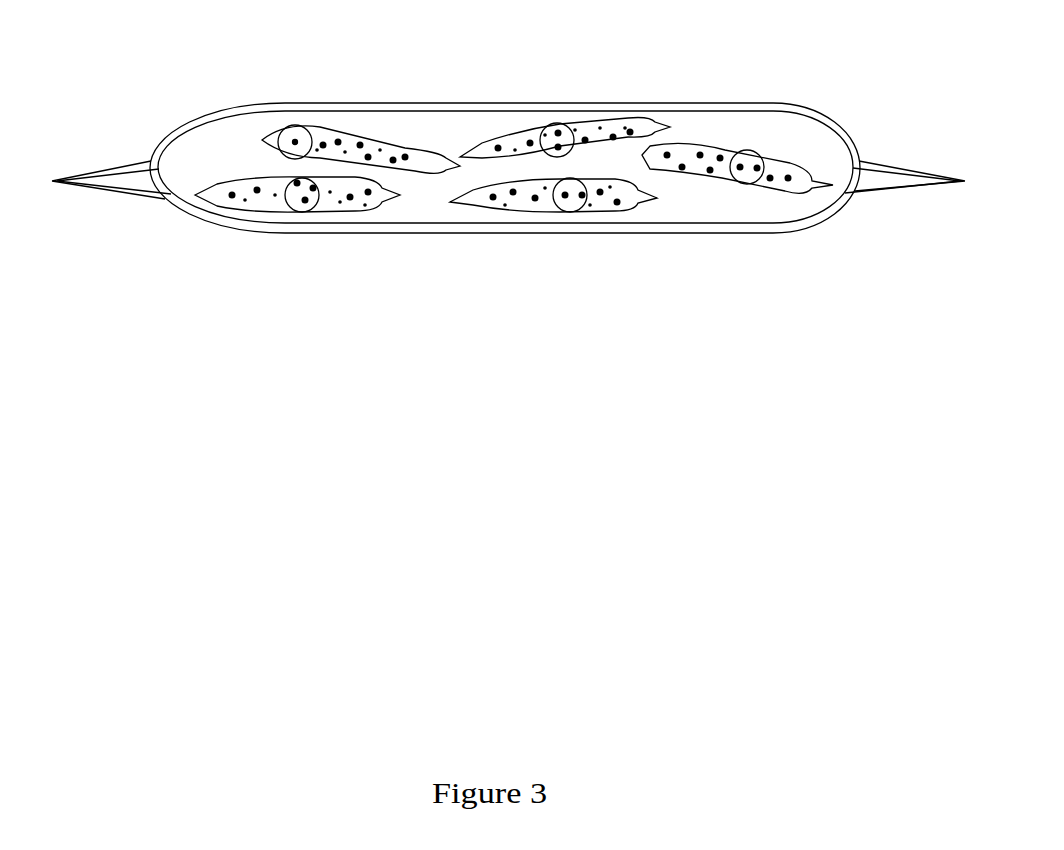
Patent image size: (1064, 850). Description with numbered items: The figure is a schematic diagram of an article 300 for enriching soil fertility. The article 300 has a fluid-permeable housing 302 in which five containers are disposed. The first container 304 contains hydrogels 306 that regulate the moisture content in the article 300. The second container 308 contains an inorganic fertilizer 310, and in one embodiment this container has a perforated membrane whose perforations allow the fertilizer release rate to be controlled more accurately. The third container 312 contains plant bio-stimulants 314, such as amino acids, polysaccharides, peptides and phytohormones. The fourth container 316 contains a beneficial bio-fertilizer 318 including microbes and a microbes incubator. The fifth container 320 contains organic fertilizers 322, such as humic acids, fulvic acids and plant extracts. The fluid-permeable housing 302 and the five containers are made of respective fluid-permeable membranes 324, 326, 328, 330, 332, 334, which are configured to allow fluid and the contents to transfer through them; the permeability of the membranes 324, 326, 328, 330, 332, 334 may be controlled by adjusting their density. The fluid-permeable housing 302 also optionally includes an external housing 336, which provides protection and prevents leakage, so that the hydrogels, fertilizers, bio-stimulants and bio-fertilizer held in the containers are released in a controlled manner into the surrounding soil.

The article 300 is at (125, 365).
The fluid-permeable housing 302 is at (519, 90).
The first container 304 is at (371, 125).
The hydrogels 306 is at (278, 142).
The second container 308 is at (338, 217).
The inorganic fertilizer 310 is at (302, 212).
The third container 312 is at (598, 108).
The plant bio-stimulants 314 is at (556, 125).
The fourth container 316 is at (535, 223).
The beneficial bio-fertilizer 318 is at (570, 212).
The fifth container 320 is at (694, 137).
The organic fertilizers 322 is at (807, 168).
The fluid-permeable membrane 324 is at (766, 103).
The fluid-permeable membrane 326 is at (333, 130).
The fluid-permeable membrane 328 is at (373, 208).
The fluid-permeable membrane 330 is at (642, 125).
The fluid-permeable membrane 332 is at (622, 210).
The fluid-permeable membrane 334 is at (792, 193).
The external housing 336 is at (433, 103).